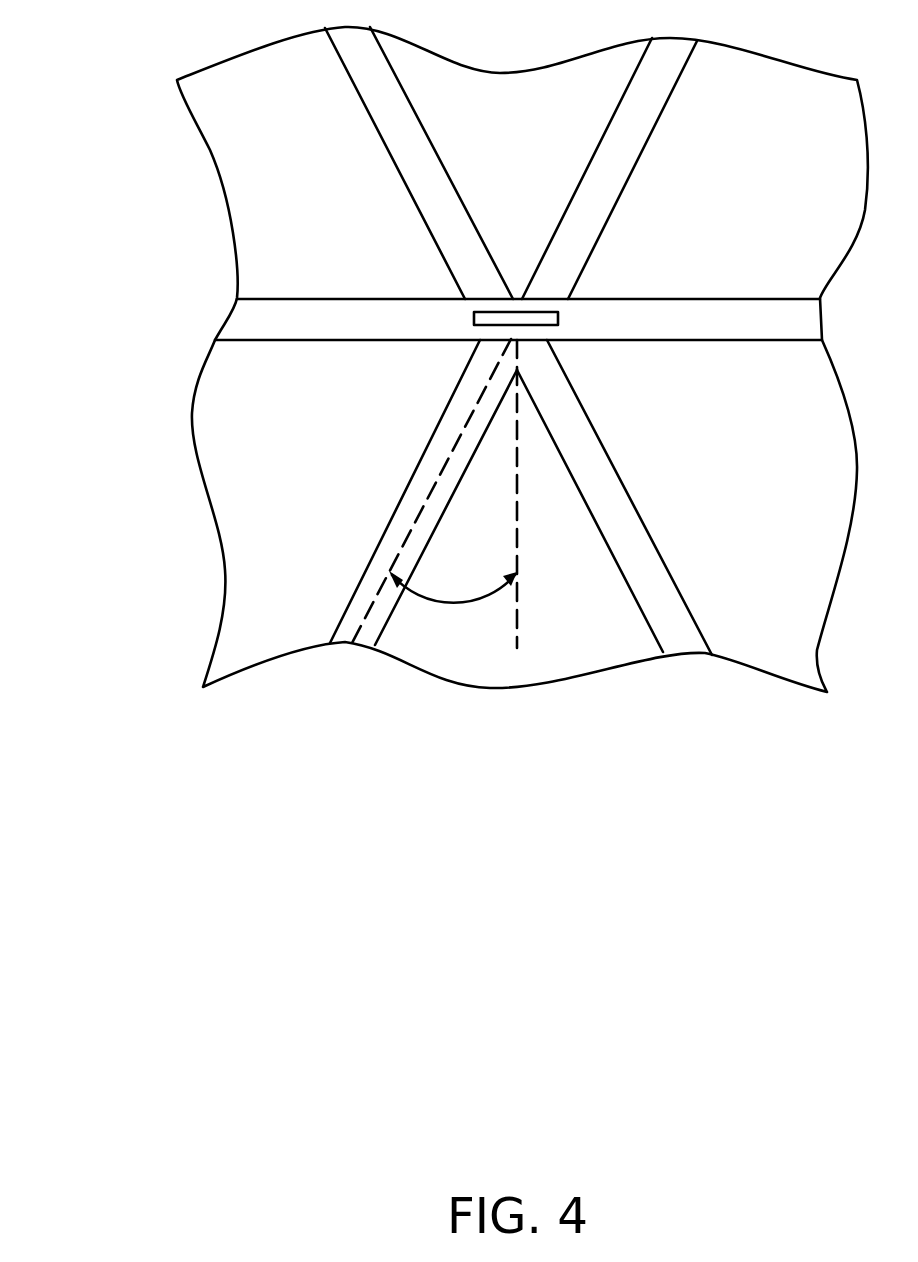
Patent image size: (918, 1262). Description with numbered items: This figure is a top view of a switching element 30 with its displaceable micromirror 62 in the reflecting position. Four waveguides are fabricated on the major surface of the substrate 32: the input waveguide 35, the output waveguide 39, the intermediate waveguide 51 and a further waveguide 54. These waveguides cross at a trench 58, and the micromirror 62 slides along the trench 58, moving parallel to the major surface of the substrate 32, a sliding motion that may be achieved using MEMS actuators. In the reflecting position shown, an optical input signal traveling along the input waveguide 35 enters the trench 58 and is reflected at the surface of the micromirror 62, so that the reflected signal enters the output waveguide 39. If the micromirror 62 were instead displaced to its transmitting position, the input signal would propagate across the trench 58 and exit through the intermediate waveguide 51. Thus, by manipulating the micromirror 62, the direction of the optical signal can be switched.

The switching element 30 is at (147, 172).
The substrate 32 is at (240, 555).
The input waveguide 35 is at (407, 507).
The output waveguide 39 is at (628, 507).
The intermediate waveguide 51 is at (625, 158).
The waveguide 54 is at (405, 158).
The trench 58 is at (282, 333).
The displaceable micromirror 62 is at (548, 318).